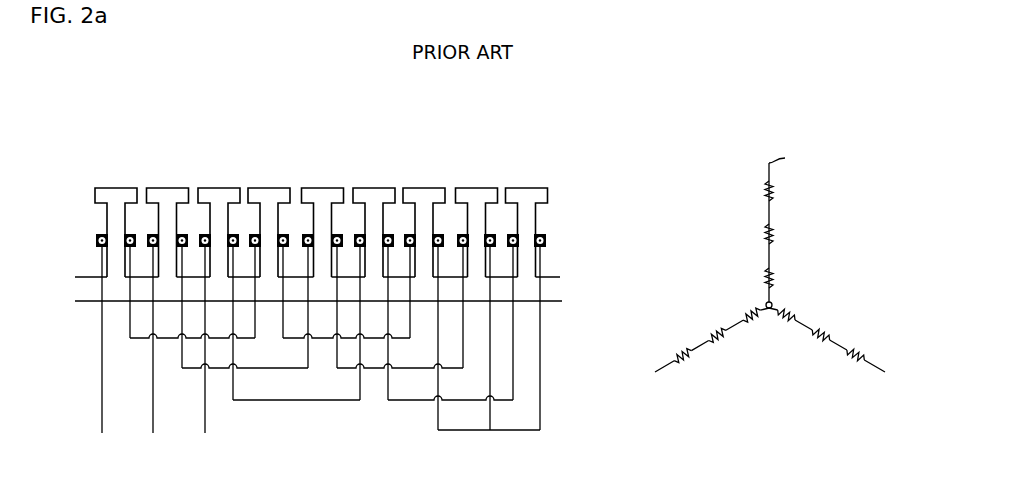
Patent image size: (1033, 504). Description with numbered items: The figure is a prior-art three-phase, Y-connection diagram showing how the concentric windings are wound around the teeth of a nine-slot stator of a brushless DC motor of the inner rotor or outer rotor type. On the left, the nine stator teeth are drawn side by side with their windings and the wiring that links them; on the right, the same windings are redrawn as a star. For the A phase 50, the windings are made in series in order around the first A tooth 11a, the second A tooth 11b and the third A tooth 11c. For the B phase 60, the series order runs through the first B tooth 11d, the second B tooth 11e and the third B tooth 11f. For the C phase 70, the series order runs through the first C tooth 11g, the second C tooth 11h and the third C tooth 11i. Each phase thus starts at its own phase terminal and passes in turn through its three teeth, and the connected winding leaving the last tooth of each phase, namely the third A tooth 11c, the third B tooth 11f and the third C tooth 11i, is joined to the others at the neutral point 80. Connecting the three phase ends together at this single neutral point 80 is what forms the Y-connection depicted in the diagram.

The A1 tooth 11a is at (117, 187).
The A2 tooth 11b is at (270, 187).
The A3 tooth 11c is at (425, 187).
The B1 tooth 11d is at (168, 187).
The B2 tooth 11e is at (324, 187).
The B3 tooth 11f is at (478, 187).
The C1 tooth 11g is at (220, 187).
The C2 tooth 11h is at (375, 187).
The C3 tooth 11i is at (528, 187).
The A phase 50 is at (102, 433).
The B phase 60 is at (153, 433).
The C phase 70 is at (205, 433).
The neutral point 80 is at (490, 430).